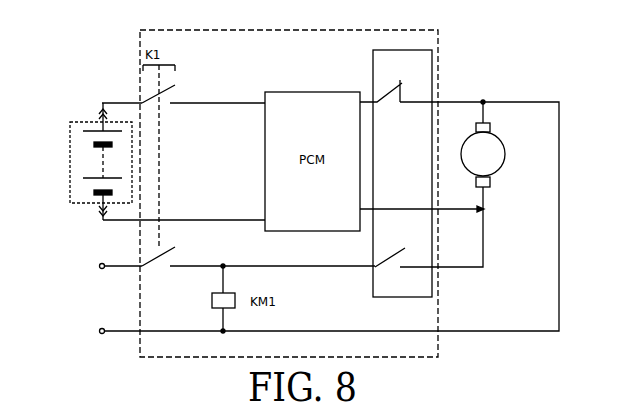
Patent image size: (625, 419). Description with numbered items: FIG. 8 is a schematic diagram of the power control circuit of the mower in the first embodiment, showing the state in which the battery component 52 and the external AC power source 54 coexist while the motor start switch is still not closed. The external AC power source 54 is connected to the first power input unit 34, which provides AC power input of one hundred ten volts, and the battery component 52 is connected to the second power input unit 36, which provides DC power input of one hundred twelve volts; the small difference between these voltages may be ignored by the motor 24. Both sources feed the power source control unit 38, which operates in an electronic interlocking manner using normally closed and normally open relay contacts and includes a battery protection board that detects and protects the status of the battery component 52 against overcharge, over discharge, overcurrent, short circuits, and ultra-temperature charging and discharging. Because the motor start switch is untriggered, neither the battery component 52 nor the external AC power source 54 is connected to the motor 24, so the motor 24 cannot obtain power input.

The motor 24 is at (497, 148).
The first power input unit 34 is at (101, 264).
The second power input unit 36 is at (102, 104).
The power source control unit 38 is at (440, 52).
The battery component 52 is at (85, 122).
The external AC power source 54 is at (84, 295).